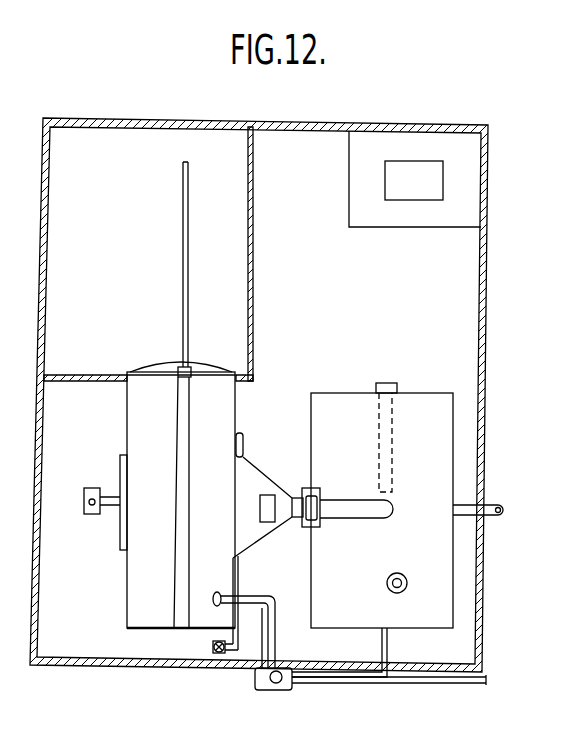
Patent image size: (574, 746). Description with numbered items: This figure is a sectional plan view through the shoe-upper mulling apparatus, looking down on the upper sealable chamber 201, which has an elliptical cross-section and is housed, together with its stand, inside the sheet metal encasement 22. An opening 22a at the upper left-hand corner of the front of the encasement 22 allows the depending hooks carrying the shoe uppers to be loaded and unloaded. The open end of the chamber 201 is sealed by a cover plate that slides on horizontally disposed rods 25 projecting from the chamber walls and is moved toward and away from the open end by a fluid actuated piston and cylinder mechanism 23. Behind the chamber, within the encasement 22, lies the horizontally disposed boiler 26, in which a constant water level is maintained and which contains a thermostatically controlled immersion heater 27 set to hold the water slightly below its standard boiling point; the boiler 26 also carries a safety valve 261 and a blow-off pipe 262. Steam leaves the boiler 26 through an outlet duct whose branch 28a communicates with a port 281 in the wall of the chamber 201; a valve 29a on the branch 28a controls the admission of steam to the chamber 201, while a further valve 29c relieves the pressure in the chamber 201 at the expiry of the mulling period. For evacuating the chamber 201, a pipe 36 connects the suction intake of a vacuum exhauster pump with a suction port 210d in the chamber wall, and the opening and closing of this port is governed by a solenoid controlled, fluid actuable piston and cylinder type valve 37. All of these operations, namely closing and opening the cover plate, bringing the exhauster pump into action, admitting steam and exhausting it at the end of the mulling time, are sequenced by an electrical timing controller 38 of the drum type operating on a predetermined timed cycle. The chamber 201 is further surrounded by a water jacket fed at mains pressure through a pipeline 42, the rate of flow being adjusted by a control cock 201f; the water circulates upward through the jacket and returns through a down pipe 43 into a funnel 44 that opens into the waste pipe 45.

The sheet metal encasement 22 is at (481, 295).
The opening 22a is at (44, 297).
The electrical timing controller 38 is at (405, 194).
The sealable chamber 201 is at (167, 551).
The horizontally disposed rod 25 is at (183, 293).
The fluid actuated piston and cylinder mechanism 23 is at (178, 380).
The plate 210d is at (121, 456).
The solenoid controlled fluid actuable piston and cylinder type valve 37 is at (90, 488).
The pipe 36 is at (92, 507).
The pipeline 42 is at (244, 441).
The port 281 is at (255, 531).
The control cock 201f is at (221, 656).
The valve 29c is at (268, 494).
The valve 29a is at (314, 502).
The branch 28a is at (351, 518).
The boiler 26 is at (410, 467).
The thermostatically controlled immersion heater 27 is at (392, 384).
The safety valve 261 is at (405, 577).
The blow off pipe 262 is at (401, 592).
The down pipe 43 is at (281, 612).
The funnel 44 is at (277, 690).
The waste pipe 45 is at (456, 684).